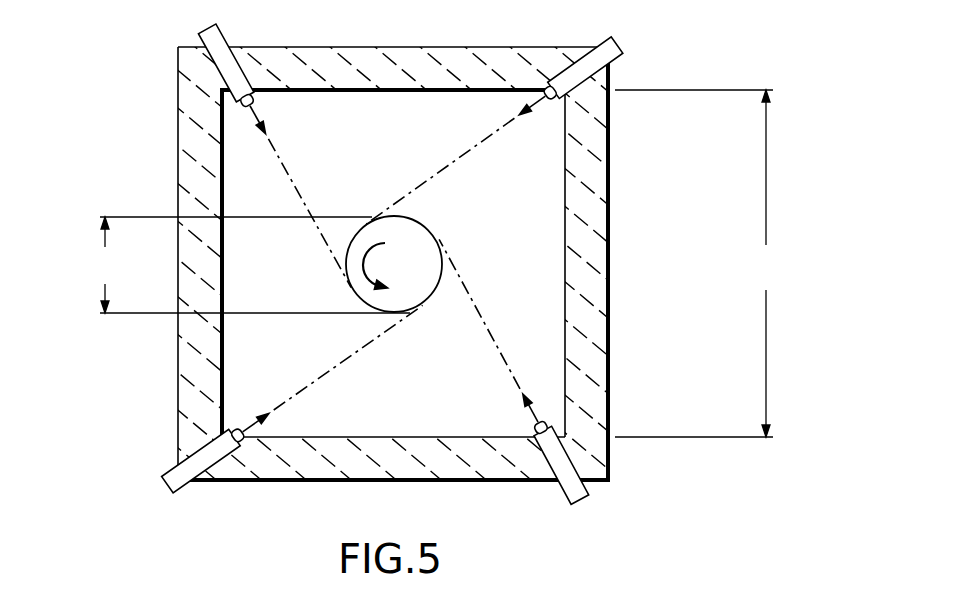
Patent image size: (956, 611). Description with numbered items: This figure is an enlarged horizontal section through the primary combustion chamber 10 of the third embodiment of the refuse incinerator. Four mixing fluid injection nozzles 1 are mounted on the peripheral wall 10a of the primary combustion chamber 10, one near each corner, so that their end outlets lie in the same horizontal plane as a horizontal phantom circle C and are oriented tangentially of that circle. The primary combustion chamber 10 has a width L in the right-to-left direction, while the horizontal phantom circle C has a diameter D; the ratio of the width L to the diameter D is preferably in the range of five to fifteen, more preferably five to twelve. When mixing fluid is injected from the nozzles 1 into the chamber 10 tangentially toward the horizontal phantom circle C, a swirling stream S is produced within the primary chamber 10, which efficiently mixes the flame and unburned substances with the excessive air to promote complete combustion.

The mixing fluid injection nozzle 1 is at (220, 36).
The primary combustion chamber 10 is at (555, 203).
The peripheral wall 10a is at (416, 68).
The swirling stream S is at (378, 258).
The horizontal phantom circle C is at (424, 306).
The diameter D is at (252, 265).
The width L is at (694, 263).